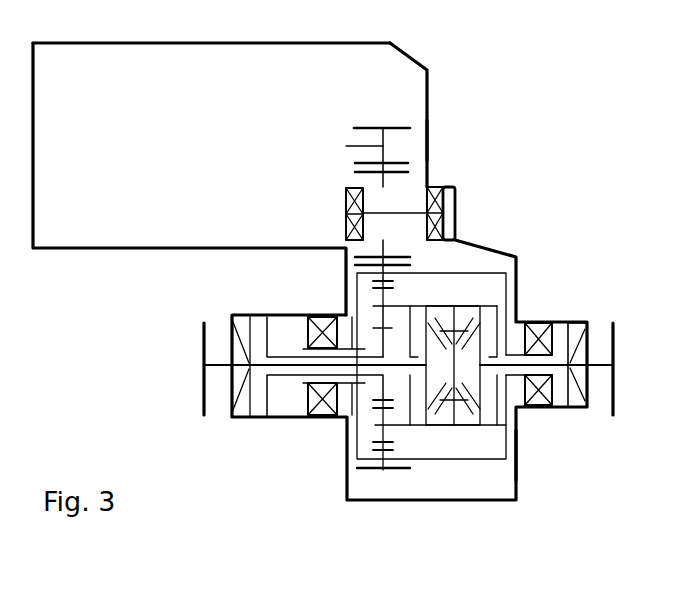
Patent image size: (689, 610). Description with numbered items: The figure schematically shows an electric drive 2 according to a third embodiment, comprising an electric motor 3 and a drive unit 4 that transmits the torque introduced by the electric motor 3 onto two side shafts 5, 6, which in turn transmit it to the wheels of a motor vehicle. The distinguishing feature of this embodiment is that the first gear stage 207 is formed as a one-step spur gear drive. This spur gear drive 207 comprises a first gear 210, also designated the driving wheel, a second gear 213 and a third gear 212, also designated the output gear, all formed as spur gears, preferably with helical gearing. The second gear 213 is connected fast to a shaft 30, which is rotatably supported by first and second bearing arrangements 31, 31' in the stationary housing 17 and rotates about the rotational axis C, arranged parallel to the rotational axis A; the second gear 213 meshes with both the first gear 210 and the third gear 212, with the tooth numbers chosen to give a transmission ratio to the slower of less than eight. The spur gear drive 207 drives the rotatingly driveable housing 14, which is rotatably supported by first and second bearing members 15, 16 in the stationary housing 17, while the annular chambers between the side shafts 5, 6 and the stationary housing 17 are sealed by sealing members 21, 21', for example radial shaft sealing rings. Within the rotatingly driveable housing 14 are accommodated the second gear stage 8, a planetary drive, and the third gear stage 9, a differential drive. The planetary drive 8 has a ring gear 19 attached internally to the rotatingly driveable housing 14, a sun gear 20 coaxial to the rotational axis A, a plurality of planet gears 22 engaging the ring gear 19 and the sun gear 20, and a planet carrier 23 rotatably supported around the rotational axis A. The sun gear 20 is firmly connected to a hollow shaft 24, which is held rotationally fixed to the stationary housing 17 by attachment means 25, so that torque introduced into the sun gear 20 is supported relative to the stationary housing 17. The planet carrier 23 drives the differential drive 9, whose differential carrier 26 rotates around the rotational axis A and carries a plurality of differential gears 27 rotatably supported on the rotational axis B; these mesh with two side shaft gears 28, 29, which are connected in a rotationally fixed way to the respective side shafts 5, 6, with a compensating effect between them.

The electric drive 2 is at (567, 81).
The electric motor 3 is at (186, 149).
The drive unit 4 is at (424, 56).
The side shaft 5 is at (602, 367).
The side shaft 6 is at (218, 367).
The second gear stage 8 is at (400, 437).
The third gear stage 9 is at (493, 433).
The rotatingly driveable housing 14 is at (497, 272).
The first bearing member 15 is at (543, 330).
The second bearing member 16 is at (323, 412).
The stationary housing 17 is at (428, 137).
The ring gear 19 is at (387, 287).
The sun gear 20 is at (380, 347).
The sealing member 21 is at (599, 342).
The sealing member 21' is at (245, 396).
The planet gear 22 is at (375, 433).
The planet carrier 23 is at (393, 425).
The hollow shaft 24 is at (278, 357).
The attachment means 25 is at (262, 333).
The differential carrier 26 is at (510, 458).
The differential gear 27 is at (463, 410).
The side shaft gear 28 is at (497, 338).
The side shaft gear 29 is at (464, 387).
The shaft 30 is at (422, 196).
The first bearing arrangement 31 is at (486, 213).
The second bearing arrangement 31' is at (330, 214).
The first gear stage 207 is at (377, 110).
The first gear 210 is at (397, 128).
The third gear 212 is at (407, 262).
The second gear 213 is at (405, 167).
The rotational axis A is at (288, 377).
The rotational axis B is at (452, 417).
The rotational axis C is at (448, 198).